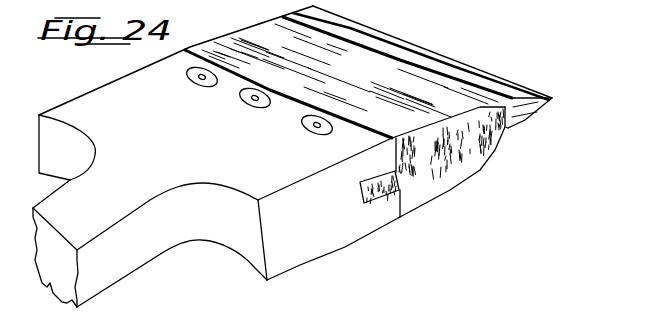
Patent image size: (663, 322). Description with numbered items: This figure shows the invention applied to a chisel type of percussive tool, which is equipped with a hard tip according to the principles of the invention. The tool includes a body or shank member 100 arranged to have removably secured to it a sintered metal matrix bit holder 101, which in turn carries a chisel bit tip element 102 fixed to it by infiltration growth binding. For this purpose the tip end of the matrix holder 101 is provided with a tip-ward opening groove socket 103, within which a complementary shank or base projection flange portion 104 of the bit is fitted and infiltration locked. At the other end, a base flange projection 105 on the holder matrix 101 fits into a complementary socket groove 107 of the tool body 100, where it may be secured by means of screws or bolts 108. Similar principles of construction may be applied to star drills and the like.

The body or shank member 100 is at (300, 264).
The sintered metal matrix bit holder 101 is at (433, 184).
The chisel bit tip element 102 is at (540, 112).
The groove socket 103 is at (509, 126).
The shank or base projection flange portion 104 is at (514, 129).
The base flange projection 105 is at (398, 194).
The socket groove 107 is at (378, 203).
The screws or bolts 108 is at (303, 127).